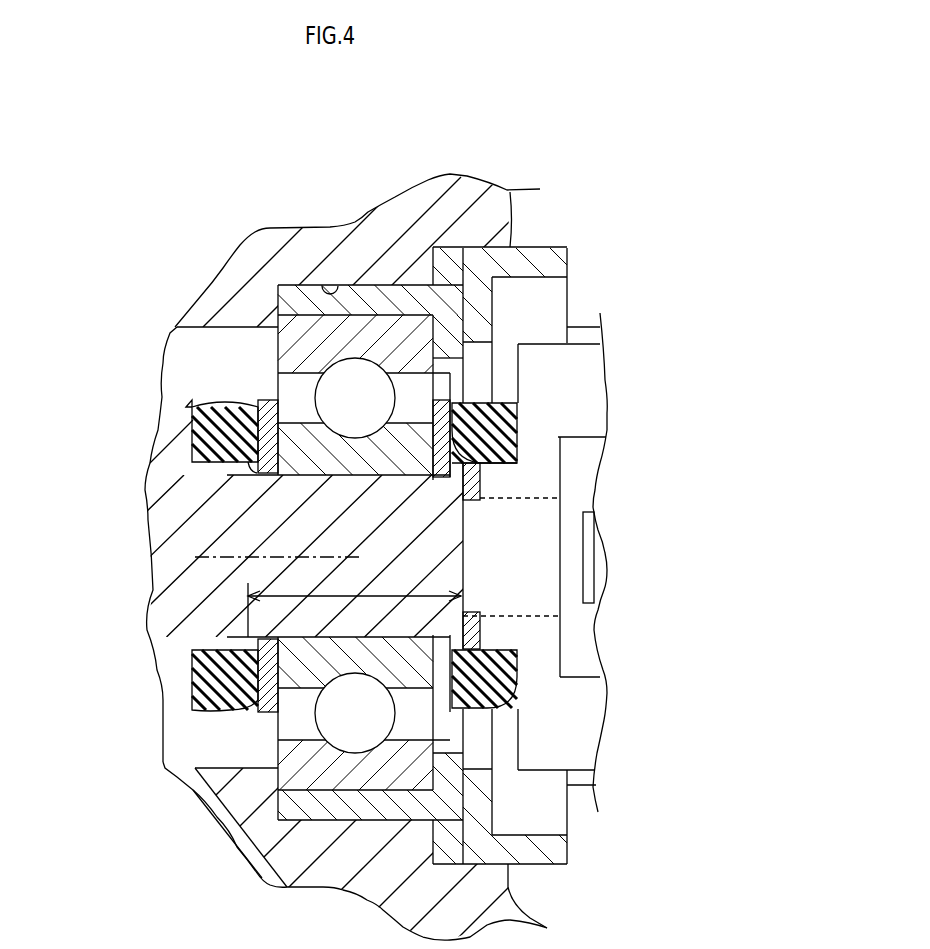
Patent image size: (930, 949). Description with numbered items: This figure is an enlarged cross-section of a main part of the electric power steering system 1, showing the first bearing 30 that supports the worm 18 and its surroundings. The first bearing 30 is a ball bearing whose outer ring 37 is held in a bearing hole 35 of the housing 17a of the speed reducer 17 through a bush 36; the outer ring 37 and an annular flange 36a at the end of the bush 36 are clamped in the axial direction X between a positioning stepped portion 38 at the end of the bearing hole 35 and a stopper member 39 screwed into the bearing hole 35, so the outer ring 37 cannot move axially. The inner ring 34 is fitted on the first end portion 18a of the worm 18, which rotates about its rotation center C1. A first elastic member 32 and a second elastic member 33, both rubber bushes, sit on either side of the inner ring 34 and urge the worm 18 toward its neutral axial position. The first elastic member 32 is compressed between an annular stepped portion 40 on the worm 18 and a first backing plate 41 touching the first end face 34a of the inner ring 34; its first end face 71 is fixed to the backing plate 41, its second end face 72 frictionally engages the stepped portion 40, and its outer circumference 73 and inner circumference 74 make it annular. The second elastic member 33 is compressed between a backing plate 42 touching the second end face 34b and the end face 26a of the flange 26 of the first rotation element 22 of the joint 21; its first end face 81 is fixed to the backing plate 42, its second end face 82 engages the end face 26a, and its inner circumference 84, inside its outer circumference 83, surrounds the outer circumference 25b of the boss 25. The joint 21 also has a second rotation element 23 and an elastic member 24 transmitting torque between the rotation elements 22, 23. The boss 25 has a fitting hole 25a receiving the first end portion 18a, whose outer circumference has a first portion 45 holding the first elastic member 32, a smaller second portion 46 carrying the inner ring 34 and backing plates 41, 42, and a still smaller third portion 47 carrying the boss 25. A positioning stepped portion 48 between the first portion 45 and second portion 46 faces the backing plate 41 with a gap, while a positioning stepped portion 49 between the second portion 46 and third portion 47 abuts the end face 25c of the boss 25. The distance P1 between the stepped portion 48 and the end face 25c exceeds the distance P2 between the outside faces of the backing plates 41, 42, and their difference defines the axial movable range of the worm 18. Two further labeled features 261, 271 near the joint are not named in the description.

The motor unit 1 is at (522, 162).
The speed reducer 17 is at (150, 612).
The housing 17a is at (440, 185).
The worm 18 is at (147, 597).
The first end portion 18a is at (477, 555).
The joint 21 is at (608, 712).
The first rotation element 22 is at (580, 775).
The second rotation element 23 is at (606, 591).
The elastic member 24 is at (580, 663).
The boss 25 is at (560, 498).
The fitting hole 25a is at (480, 510).
The outer circumference 25b is at (520, 430).
The end face 25c is at (393, 440).
The annular flange 26 is at (553, 452).
The end face 26a is at (555, 480).
The recess 261 is at (593, 417).
The groove 271 is at (607, 567).
The first bearing 30 is at (313, 715).
The first elastic member 32 is at (235, 408).
The second elastic member 33 is at (517, 380).
The inner ring 34 is at (307, 475).
The first end face 34a is at (213, 707).
The second end face 34b is at (505, 697).
The bearing hole 35 is at (282, 419).
The bush 36 is at (377, 290).
The annular flange 36a is at (447, 334).
The outer ring 37 is at (287, 342).
The positioning stepped portion 38 is at (289, 295).
The stopper member 39 is at (536, 252).
The annular stepped portion 40 is at (193, 432).
The first annular backing plate 41 is at (268, 407).
The annular backing plate 42 is at (480, 403).
The first portion 45 is at (192, 668).
The second portion 46 is at (463, 596).
The third portion 47 is at (482, 643).
The positioning stepped portion 48 is at (237, 475).
The positioning stepped portion 49 is at (475, 470).
The first end face 71 is at (283, 428).
The second end face 72 is at (187, 417).
The outer circumference 73 is at (210, 393).
The inner circumference 74 is at (240, 480).
The first end face 81 is at (430, 427).
The second end face 82 is at (560, 440).
The outer circumference 83 is at (500, 405).
The inner circumference 84 is at (500, 465).
The axial direction X is at (81, 562).
The rotation center C1 is at (232, 557).
The distance P1 is at (327, 596).
The distance P2 is at (355, 713).